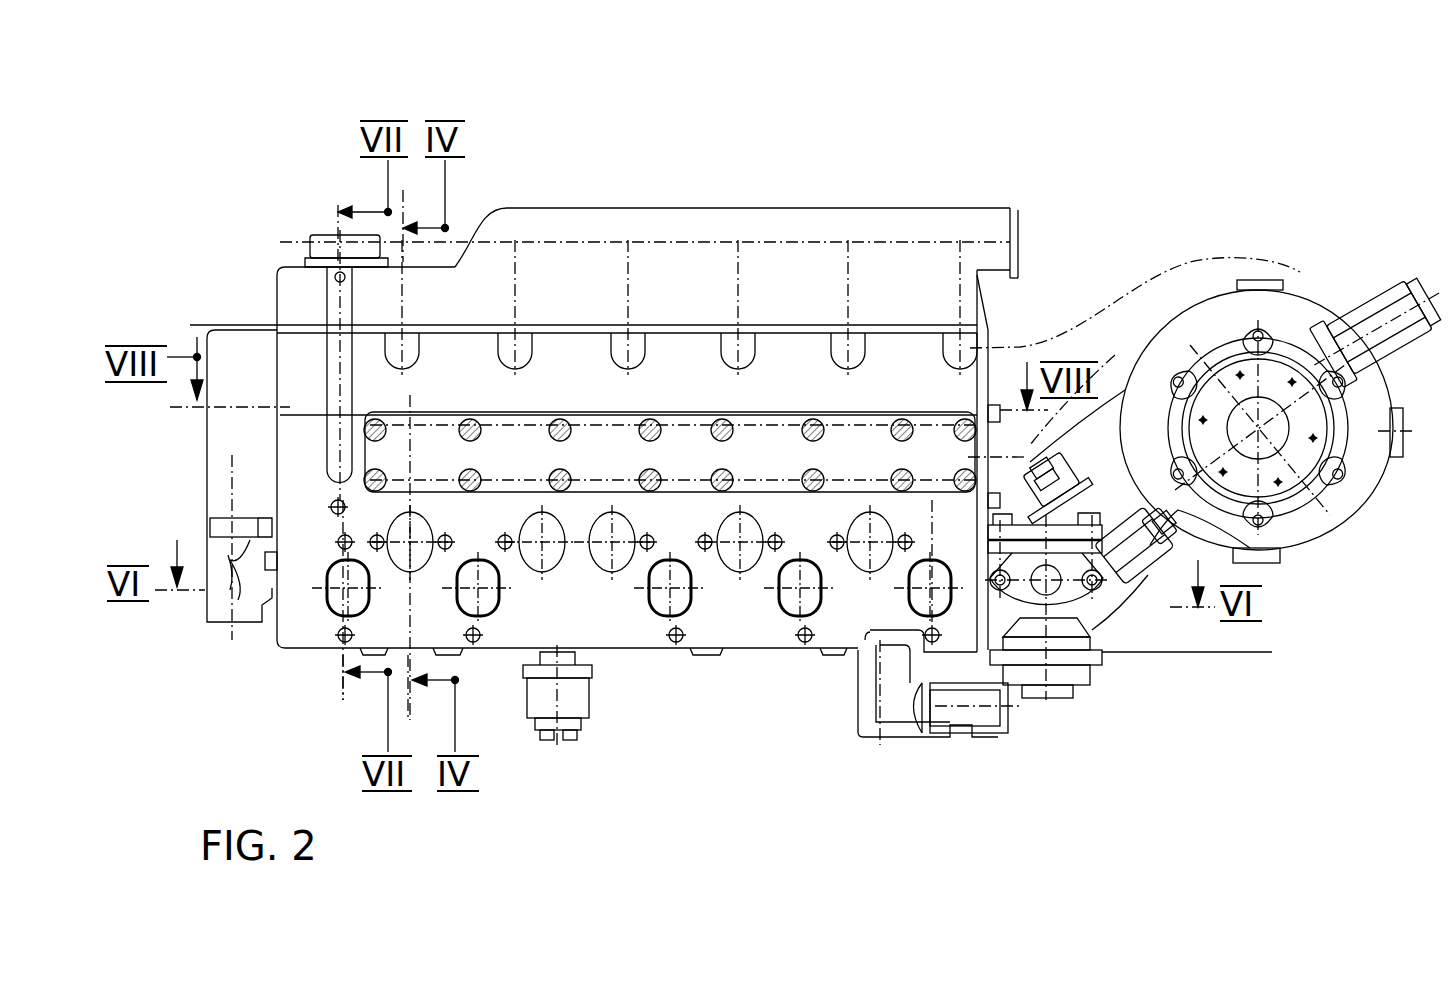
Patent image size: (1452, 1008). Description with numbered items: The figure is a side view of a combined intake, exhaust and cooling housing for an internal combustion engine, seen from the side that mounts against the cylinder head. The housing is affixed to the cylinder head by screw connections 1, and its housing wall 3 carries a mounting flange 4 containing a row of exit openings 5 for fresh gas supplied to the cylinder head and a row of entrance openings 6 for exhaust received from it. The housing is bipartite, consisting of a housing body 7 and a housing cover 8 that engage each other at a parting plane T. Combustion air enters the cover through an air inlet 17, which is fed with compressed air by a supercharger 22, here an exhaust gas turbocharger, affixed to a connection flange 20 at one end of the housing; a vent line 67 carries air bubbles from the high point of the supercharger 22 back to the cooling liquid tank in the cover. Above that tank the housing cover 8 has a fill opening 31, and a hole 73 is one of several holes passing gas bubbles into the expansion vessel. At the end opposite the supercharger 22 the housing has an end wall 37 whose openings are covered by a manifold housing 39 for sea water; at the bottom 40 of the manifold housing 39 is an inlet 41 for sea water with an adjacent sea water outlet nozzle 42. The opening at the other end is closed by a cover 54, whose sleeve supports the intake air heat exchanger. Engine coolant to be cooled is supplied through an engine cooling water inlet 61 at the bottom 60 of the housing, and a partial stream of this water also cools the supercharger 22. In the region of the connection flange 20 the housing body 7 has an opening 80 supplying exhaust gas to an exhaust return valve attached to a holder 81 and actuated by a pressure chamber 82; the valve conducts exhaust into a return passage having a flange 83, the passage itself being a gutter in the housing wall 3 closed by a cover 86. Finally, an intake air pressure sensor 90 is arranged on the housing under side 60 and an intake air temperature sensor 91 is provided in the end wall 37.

The screw connections 1 is at (343, 635).
The housing wall 3 is at (698, 376).
The mounting flange 4 is at (758, 622).
The exit openings 5 is at (746, 565).
The entrance openings 6 is at (665, 598).
The housing body 7 is at (595, 355).
The housing cover 8 is at (478, 288).
The air inlet 17 is at (1022, 275).
The connection flange 20 is at (1133, 585).
The supercharger 22 is at (1286, 310).
The fill opening 31 is at (340, 277).
The end wall 37 is at (276, 387).
The manifold housing 39 is at (222, 390).
The bottom 40 is at (272, 520).
The inlet 41 is at (218, 528).
The sea water outlet nozzle 42 is at (216, 598).
The cover 54 is at (983, 337).
The bottom 60 is at (500, 665).
The engine cooling water inlet 61 is at (905, 675).
The vent line 67 is at (1190, 262).
The hole 73 is at (327, 243).
The opening 80 is at (1053, 583).
The holder 81 is at (1072, 530).
The pressure chamber 82 is at (1078, 660).
The flange 83 is at (983, 487).
The cover 86 is at (520, 440).
The intake air pressure sensor 90 is at (576, 697).
The intake air temperature sensor 91 is at (272, 590).
The parting plane T is at (190, 323).